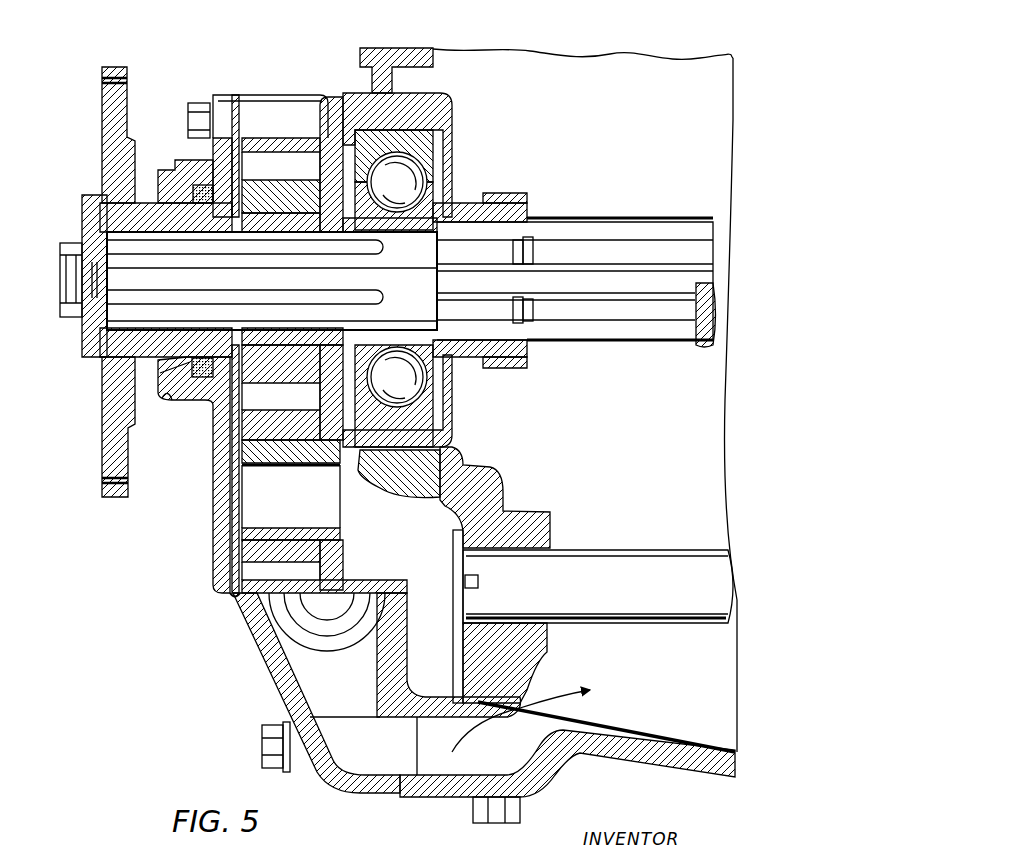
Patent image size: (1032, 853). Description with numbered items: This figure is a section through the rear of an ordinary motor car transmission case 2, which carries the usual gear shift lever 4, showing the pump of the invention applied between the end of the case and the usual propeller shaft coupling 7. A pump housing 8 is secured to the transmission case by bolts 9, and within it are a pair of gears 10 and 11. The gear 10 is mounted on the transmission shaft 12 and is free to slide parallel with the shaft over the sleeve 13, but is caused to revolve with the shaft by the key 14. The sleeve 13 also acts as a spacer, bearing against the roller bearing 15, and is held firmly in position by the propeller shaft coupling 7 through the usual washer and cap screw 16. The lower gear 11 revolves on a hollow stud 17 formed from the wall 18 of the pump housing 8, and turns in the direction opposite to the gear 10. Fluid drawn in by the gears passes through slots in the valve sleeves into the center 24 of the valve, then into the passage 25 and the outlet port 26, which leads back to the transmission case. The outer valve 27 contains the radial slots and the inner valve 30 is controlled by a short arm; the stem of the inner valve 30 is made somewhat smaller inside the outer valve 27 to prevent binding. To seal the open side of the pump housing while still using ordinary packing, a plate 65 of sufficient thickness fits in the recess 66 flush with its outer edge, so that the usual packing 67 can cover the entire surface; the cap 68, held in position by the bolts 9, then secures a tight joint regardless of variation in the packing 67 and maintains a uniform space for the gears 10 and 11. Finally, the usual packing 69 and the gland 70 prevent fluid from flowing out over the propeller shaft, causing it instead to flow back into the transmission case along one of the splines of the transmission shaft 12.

The transmission case 2 is at (557, 436).
The gear shift lever 4 is at (250, 665).
The propeller shaft coupling 7 is at (103, 125).
The pump housing 8 is at (288, 105).
The bolts 9 is at (193, 118).
The gear 10 is at (263, 166).
The gear 11 is at (255, 572).
The transmission shaft 12 is at (610, 247).
The sleeve 13 is at (350, 234).
The key 14 is at (283, 233).
The roller bearing 15 is at (422, 147).
The washer and cap screw 16 is at (64, 306).
The hollow stud 17 is at (281, 533).
The wall 18 is at (338, 538).
The center of the valve 24 is at (327, 603).
The passage 25 is at (293, 670).
The outlet port 26 is at (363, 746).
The outer valve 27 is at (355, 625).
The inner valve 30 is at (327, 620).
The plate 65 is at (216, 503).
The recess 66 is at (233, 598).
The packing 67 is at (238, 98).
The cap 68 is at (222, 473).
The packing 69 is at (200, 378).
The gland 70 is at (163, 400).